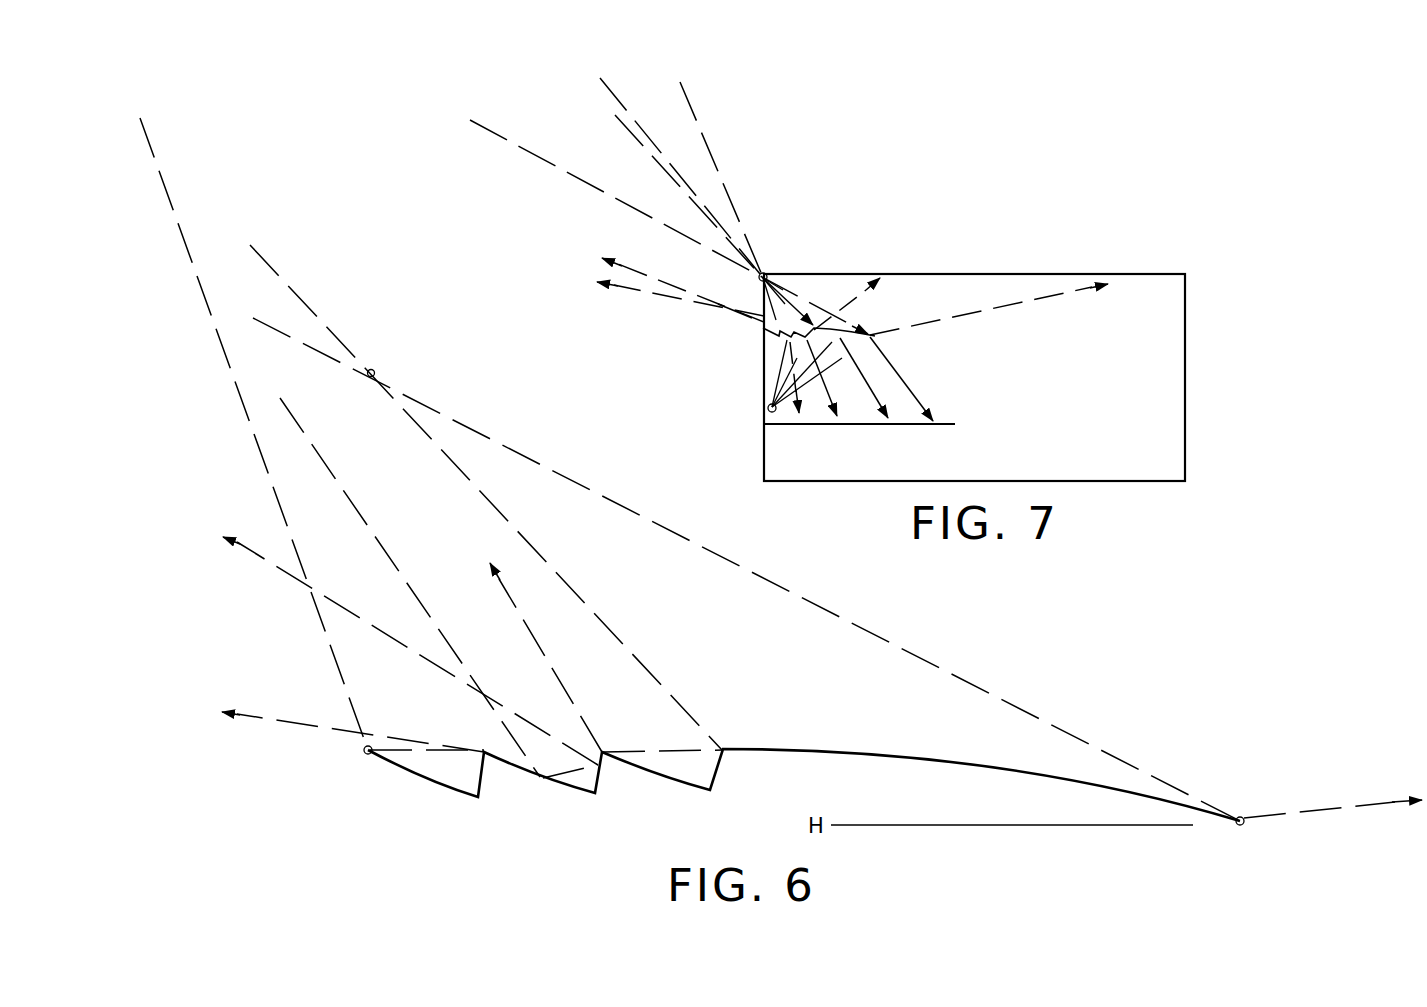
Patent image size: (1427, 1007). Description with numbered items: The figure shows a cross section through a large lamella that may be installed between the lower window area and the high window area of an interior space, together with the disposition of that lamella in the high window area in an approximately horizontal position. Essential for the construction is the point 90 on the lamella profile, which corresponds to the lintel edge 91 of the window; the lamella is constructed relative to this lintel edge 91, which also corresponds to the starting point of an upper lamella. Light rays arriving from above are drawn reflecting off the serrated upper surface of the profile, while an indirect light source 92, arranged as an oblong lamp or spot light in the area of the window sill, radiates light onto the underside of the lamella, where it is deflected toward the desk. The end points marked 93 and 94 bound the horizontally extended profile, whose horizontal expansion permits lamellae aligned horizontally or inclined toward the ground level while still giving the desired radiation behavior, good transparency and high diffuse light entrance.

In FIG. 6, the point 90 is at (373, 369).
In FIG. 7, the lintel edge 91 is at (758, 280).
In FIG. 7, the indirect light source 92 is at (767, 407).
In FIG. 6, the leading edge of serrated reflector 93 is at (366, 754).
In FIG. 6, the trailing end of reflector 94 is at (1244, 823).